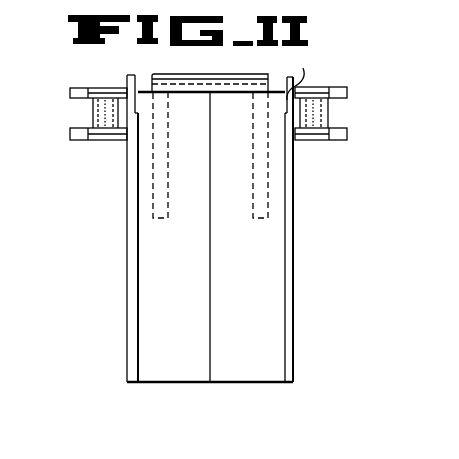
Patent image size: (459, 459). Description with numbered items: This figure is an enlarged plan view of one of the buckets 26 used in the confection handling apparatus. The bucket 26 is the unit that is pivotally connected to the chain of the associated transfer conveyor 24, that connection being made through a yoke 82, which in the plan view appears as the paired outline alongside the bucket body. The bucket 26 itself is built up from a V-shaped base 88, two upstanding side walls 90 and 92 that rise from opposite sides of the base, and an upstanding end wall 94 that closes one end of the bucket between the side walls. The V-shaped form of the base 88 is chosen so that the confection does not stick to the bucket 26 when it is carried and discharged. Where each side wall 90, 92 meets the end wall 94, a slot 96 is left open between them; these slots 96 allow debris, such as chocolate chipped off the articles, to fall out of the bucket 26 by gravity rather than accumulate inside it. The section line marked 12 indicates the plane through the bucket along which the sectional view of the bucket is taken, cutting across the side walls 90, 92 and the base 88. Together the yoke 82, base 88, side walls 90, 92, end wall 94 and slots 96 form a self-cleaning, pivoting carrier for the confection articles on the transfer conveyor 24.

The transfer conveyor 24 is at (345, 110).
The bucket 26 is at (320, 307).
The yoke 82 is at (170, 198).
The V-shaped base 88 is at (148, 287).
The side wall 90 is at (127, 182).
The side wall 92 is at (293, 228).
The end wall 94 is at (183, 74).
The slot 96 is at (142, 78).
The section line 12- 12 is at (112, 397).